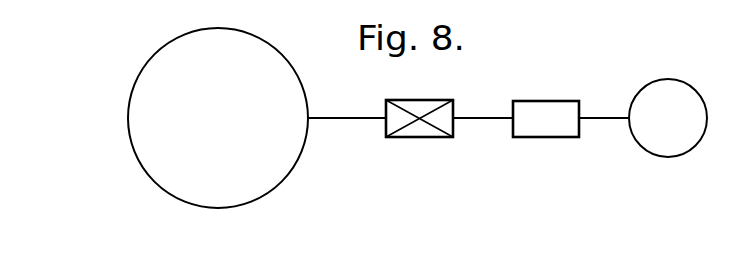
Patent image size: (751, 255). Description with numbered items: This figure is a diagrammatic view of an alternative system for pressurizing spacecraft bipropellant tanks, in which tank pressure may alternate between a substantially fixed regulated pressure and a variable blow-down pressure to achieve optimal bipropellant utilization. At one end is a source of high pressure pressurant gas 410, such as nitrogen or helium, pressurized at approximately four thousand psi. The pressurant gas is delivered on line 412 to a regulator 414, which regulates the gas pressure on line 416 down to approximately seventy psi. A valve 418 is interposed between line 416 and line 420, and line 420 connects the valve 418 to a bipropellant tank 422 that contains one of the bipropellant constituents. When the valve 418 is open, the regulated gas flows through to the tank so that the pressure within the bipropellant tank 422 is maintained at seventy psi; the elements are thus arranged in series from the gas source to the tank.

The source of high pressure pressurant gas 410 is at (698, 93).
The line 412 is at (618, 120).
The regulator 414 is at (589, 85).
The line 416 is at (500, 120).
The valve 418 is at (453, 100).
The line 420 is at (325, 117).
The bipropellant tank 422 is at (286, 56).